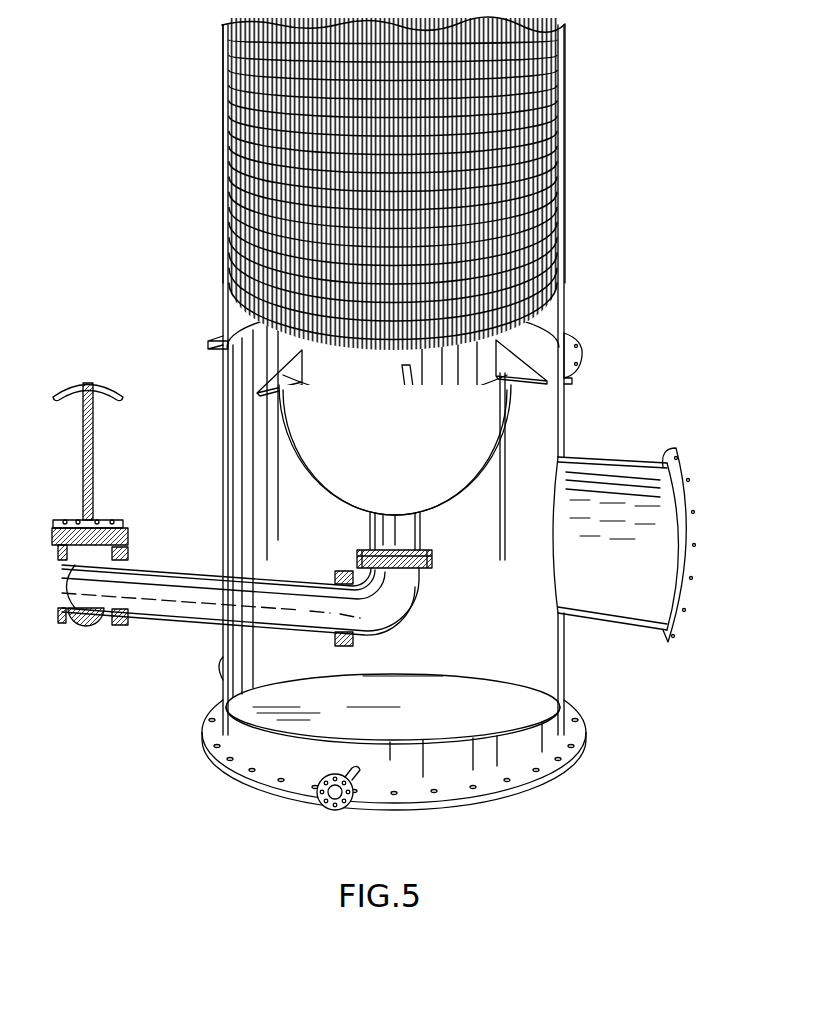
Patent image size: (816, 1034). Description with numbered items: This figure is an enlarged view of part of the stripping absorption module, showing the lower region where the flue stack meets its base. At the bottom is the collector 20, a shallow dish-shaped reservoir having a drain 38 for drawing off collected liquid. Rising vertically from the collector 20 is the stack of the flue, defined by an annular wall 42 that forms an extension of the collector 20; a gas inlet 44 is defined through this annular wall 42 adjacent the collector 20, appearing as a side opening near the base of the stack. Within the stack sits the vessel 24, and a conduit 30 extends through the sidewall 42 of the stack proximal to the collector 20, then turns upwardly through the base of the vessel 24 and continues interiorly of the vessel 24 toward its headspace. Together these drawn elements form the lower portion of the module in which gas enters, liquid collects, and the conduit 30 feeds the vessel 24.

The collector 20 is at (466, 695).
The vessel 24 is at (286, 446).
The conduit 30 is at (170, 606).
The drain 38 is at (330, 803).
The annular wall 42 is at (560, 422).
The gas inlet 44 is at (699, 594).